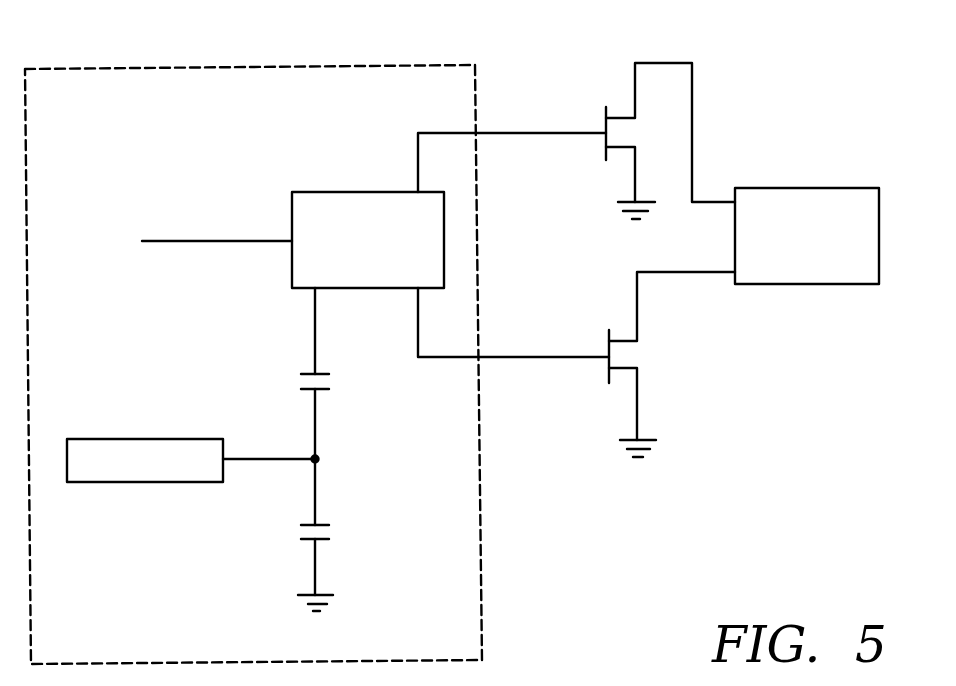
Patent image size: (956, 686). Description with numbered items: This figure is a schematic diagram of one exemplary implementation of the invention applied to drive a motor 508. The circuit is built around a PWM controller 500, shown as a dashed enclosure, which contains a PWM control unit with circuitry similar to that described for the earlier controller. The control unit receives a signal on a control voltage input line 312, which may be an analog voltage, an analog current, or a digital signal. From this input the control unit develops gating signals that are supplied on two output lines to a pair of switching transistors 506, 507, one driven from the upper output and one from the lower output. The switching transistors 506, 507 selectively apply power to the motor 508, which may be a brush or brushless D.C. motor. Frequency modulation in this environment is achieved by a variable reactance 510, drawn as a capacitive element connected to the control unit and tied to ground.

The PWM controller 500 is at (120, 68).
The control voltage input line 312 is at (196, 241).
The switching transistor 506 is at (605, 110).
The switching transistor 507 is at (608, 333).
The motor 508 is at (786, 188).
The variable reactance 510 is at (310, 540).